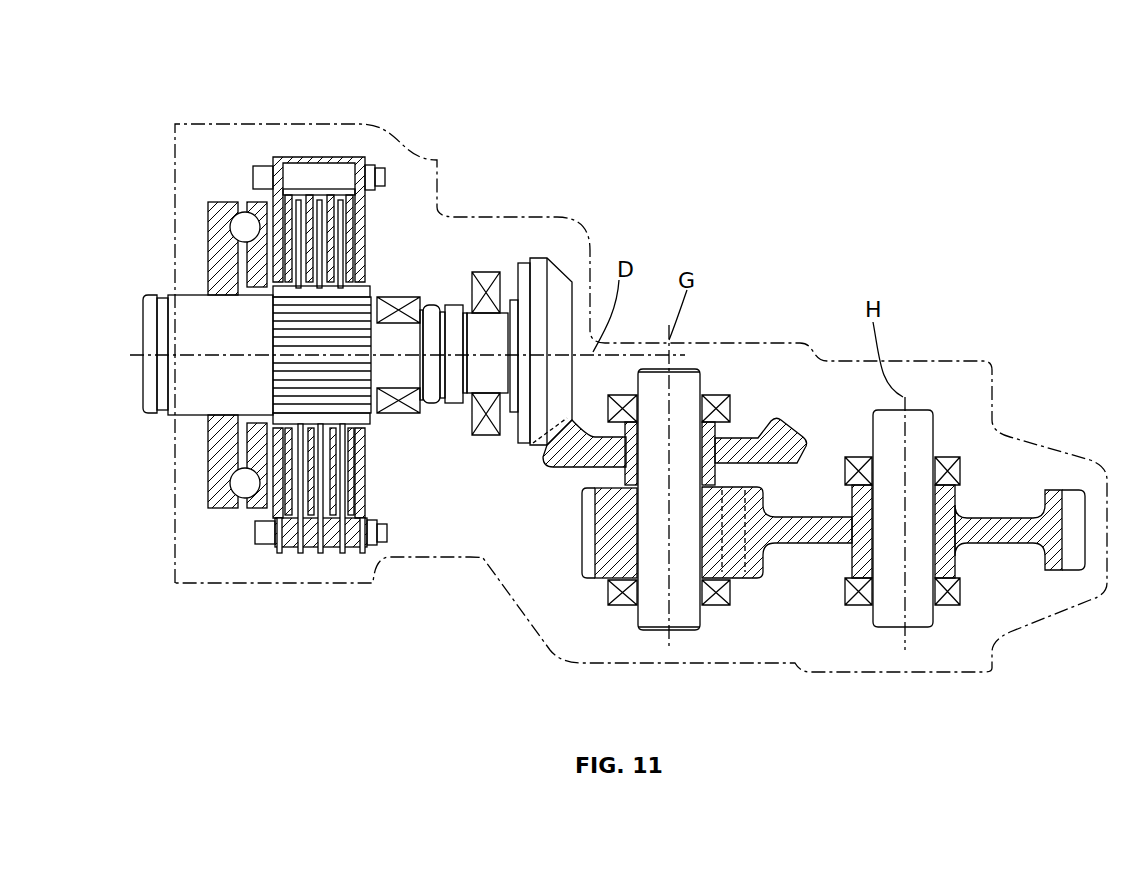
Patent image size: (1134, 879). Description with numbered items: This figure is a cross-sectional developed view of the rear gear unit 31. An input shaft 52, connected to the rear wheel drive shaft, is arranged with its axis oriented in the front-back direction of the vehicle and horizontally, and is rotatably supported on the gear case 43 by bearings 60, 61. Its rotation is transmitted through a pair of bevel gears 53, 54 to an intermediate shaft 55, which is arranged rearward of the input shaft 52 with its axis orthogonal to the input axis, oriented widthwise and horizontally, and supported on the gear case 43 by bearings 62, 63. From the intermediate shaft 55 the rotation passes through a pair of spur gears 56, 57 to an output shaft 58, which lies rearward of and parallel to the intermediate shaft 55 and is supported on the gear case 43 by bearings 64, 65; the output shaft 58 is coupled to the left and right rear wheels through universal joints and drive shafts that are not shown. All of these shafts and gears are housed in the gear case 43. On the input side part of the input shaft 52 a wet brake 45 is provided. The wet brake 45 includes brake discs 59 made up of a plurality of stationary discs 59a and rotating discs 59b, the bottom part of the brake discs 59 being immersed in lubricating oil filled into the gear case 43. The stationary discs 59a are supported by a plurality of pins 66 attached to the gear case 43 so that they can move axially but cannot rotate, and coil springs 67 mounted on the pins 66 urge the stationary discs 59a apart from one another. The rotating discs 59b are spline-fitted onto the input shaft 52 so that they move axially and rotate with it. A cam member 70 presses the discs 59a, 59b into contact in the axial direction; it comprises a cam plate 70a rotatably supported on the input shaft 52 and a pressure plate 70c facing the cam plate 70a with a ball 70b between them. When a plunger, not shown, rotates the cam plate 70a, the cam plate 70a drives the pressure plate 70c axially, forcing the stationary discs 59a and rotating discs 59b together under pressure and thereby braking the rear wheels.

The rear gear unit 31 is at (944, 304).
The gear case 43 is at (782, 340).
The wet brake 45 is at (329, 364).
The input shaft 52 is at (190, 417).
The bevel gear 53 is at (557, 262).
The bevel gear 54 is at (567, 467).
The intermediate shaft 55 is at (702, 372).
The spur gear 56 is at (738, 582).
The spur gear 57 is at (998, 543).
The output shaft 58 is at (210, 514).
The brake discs 59 is at (370, 472).
The stationary discs 59a is at (300, 553).
The rotating discs 59b is at (350, 483).
The bearing 60 is at (402, 297).
The bearing 61 is at (488, 272).
The bearing 62 is at (730, 403).
The bearing 63 is at (715, 607).
The bearing 64 is at (962, 470).
The bearing 65 is at (950, 607).
The pins 66 is at (263, 167).
The coil springs 67 is at (327, 157).
The cam member 70 is at (192, 161).
The cam plate 70a is at (207, 212).
The ball 70b is at (238, 219).
The pressure plate 70c is at (252, 202).